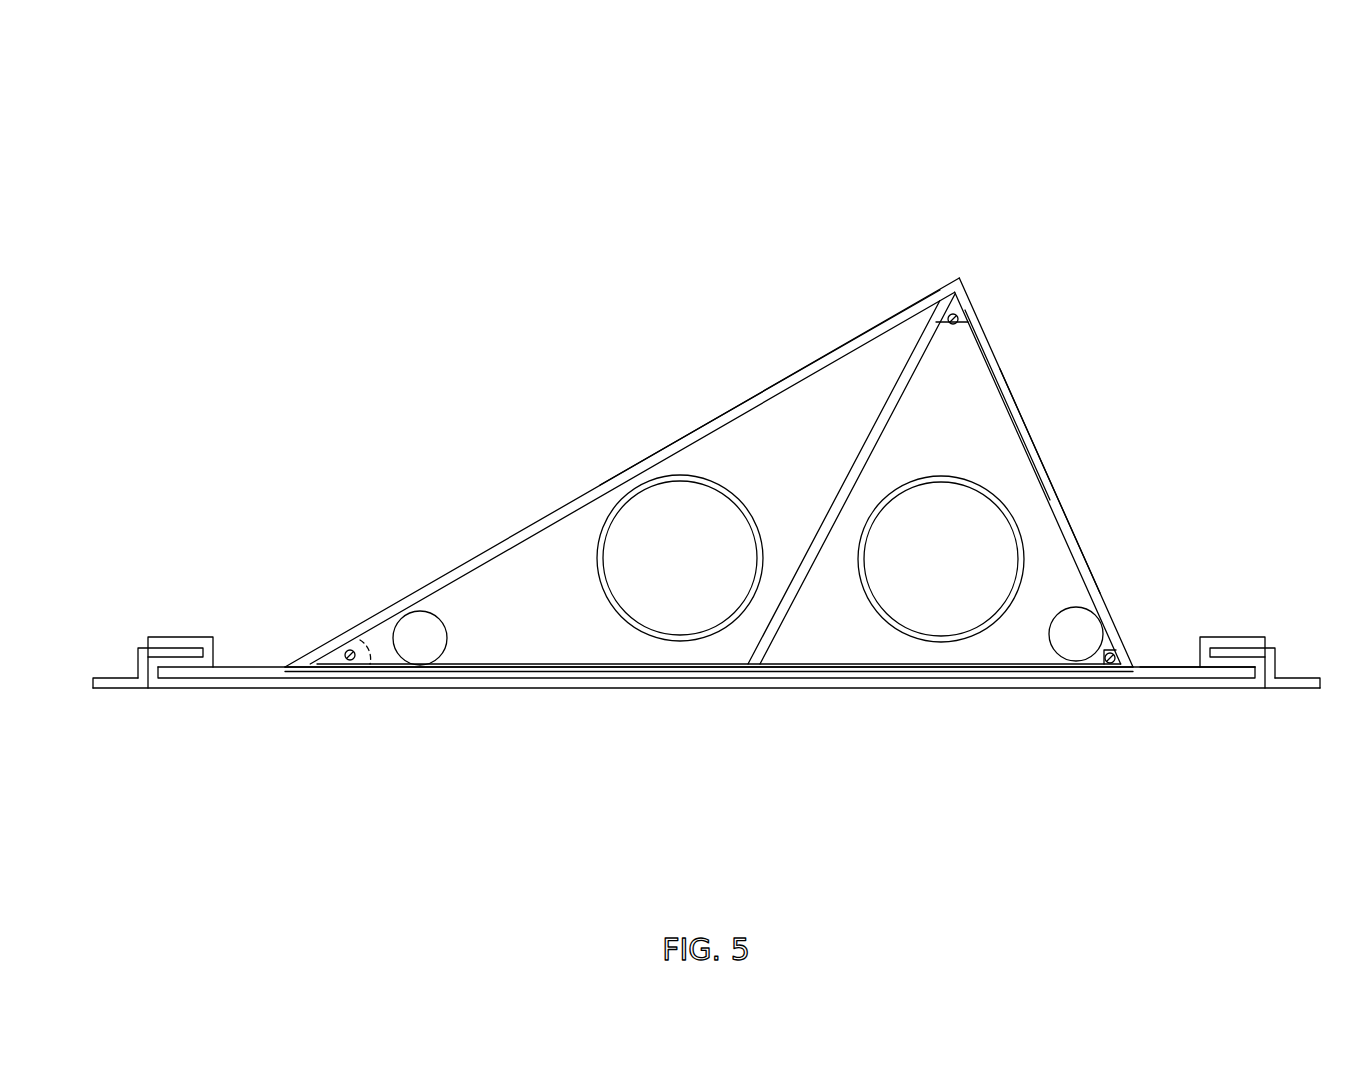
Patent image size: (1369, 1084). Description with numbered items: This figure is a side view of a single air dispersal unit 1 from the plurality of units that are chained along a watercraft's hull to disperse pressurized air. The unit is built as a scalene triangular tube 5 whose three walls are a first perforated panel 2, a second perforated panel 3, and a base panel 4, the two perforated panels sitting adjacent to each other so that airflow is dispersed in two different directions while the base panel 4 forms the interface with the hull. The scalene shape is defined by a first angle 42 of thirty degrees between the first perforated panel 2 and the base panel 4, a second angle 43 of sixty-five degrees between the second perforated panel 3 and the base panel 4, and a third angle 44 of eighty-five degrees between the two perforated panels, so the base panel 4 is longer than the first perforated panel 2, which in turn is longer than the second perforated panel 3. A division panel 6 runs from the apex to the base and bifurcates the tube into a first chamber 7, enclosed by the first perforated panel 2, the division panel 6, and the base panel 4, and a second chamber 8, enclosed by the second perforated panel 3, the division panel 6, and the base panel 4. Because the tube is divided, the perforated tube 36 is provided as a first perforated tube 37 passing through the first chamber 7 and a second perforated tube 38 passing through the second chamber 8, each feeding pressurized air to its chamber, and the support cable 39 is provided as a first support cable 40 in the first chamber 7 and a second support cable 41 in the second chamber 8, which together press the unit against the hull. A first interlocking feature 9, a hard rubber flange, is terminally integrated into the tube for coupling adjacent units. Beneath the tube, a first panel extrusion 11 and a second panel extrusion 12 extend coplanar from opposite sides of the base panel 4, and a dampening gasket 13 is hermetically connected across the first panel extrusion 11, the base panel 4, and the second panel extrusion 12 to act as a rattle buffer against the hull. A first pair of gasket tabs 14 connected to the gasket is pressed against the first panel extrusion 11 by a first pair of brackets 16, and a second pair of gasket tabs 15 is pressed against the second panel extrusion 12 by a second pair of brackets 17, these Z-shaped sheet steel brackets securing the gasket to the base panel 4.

The air dispersal unit 1 is at (947, 75).
The first perforated panel 2 is at (568, 510).
The second perforated panel 3 is at (1040, 446).
The base panel 4 is at (803, 672).
The triangular tube 5 is at (834, 395).
The division panel 6 is at (878, 440).
The first chamber 7 is at (779, 425).
The second chamber 8 is at (974, 383).
The first interlocking feature 9 is at (1083, 560).
The first panel extrusion 11 is at (237, 673).
The second panel extrusion 12 is at (1158, 668).
The dampening gasket 13 is at (640, 690).
The first pair of gasket tabs 14 is at (187, 640).
The second pair of gasket tabs 15 is at (1230, 640).
The first pair of brackets 16 is at (133, 685).
The second pair of brackets 17 is at (1300, 683).
The perforated tube 36 is at (772, 529).
The first perforated tube 37 is at (598, 582).
The second perforated tube 38 is at (921, 479).
The support cable 39 is at (748, 628).
The first support cable 40 is at (432, 633).
The second support cable 41 is at (1050, 630).
The first angle 42 is at (350, 662).
The second angle 43 is at (1110, 665).
The third angle 44 is at (957, 316).